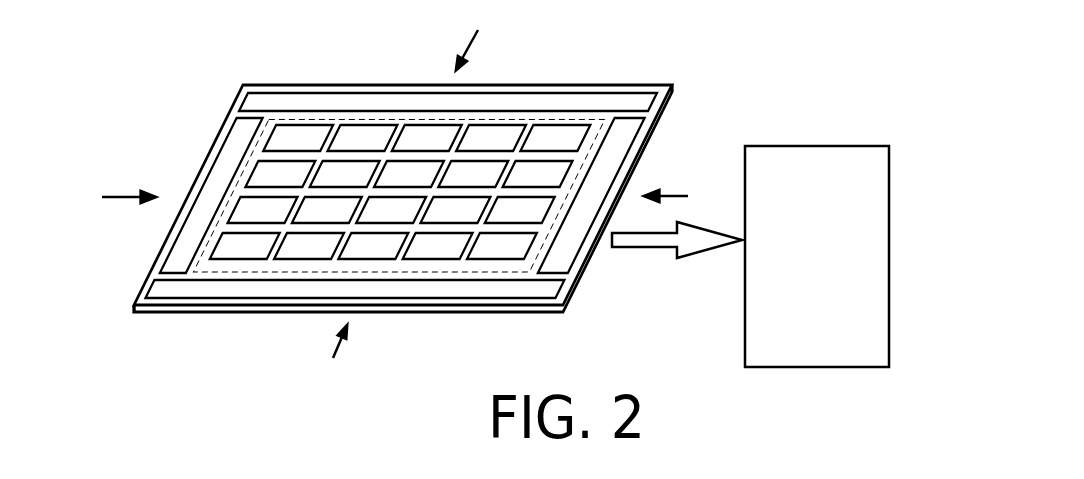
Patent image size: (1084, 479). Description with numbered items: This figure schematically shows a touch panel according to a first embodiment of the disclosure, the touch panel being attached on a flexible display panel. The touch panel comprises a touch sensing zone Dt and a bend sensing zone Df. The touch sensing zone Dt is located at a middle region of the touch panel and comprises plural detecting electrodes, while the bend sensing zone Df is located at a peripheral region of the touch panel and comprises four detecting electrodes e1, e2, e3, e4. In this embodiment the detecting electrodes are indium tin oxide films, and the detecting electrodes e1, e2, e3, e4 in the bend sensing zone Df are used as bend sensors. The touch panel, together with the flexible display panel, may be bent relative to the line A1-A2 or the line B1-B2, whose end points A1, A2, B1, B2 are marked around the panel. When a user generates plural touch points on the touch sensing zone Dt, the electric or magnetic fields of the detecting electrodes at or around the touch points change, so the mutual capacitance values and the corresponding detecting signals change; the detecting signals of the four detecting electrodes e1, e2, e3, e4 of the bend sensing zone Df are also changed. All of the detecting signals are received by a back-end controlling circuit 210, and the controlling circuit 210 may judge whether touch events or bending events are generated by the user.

The bend sensing zone Df is at (243, 87).
The touch sensing zone Dt is at (250, 172).
The detecting electrode e1 is at (368, 108).
The detecting electrode e2 is at (425, 293).
The detecting electrode e3 is at (177, 267).
The detecting electrode e4 is at (563, 257).
The line A1-A2 endpoint A1 is at (482, 37).
The line A1-A2 endpoint A2 is at (326, 358).
The line B1-B2 endpoint B1 is at (108, 196).
The line B1-B2 endpoint B2 is at (687, 196).
The controlling circuit 210 is at (833, 153).